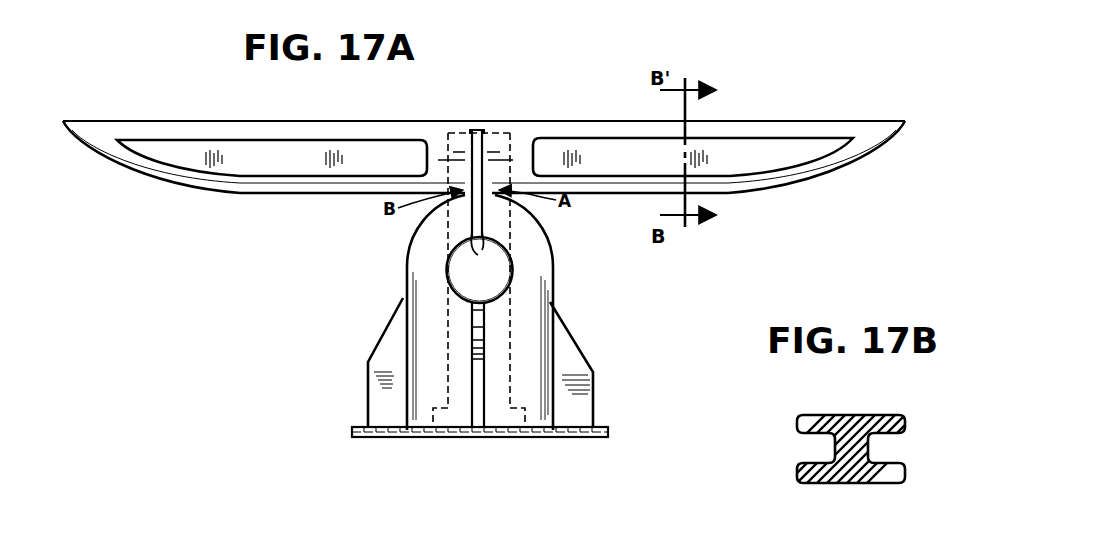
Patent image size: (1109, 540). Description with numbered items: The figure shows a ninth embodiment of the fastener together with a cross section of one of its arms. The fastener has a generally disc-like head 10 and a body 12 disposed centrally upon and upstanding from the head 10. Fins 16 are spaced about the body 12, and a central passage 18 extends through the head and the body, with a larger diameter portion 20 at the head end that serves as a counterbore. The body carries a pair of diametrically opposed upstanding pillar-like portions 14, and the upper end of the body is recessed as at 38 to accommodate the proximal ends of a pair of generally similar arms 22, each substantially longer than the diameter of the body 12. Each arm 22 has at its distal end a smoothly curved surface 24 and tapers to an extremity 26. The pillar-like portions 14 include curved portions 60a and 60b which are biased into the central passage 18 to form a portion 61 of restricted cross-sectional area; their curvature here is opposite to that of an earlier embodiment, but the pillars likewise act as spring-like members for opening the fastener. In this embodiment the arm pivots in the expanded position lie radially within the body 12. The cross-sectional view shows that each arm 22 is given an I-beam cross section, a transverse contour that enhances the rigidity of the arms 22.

In FIG. 17A, the head 10 is at (360, 430).
In FIG. 17A, the body 12 is at (552, 366).
In FIG. 17A, the pillar-like portions 14 is at (432, 327).
In FIG. 17A, the fins 16 is at (385, 391).
In FIG. 17A, the central passage 18 is at (452, 365).
In FIG. 17A, the larger diameter portion 20 is at (436, 440).
In FIG. 17A, the arms 22 is at (305, 121).
In FIG. 17B, the arms 22 is at (905, 421).
In FIG. 17A, the smoothly curved surface 24 is at (843, 160).
In FIG. 17A, the extremity 26 is at (63, 121).
In FIG. 17A, the recess 38 is at (493, 279).
In FIG. 17A, the curved portion 60a is at (510, 222).
In FIG. 17A, the curved portion 60b is at (460, 226).
In FIG. 17A, the portion of restricted cross-sectional area 61 is at (447, 263).